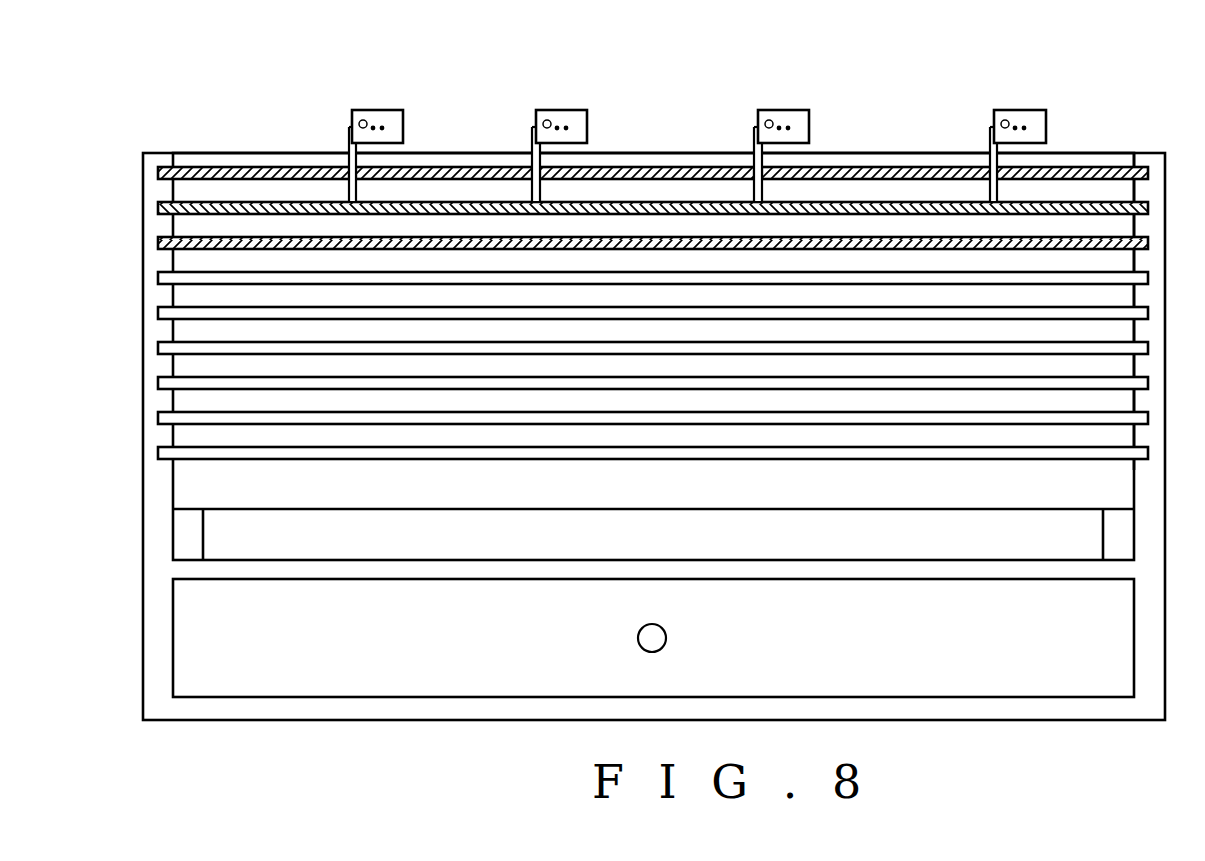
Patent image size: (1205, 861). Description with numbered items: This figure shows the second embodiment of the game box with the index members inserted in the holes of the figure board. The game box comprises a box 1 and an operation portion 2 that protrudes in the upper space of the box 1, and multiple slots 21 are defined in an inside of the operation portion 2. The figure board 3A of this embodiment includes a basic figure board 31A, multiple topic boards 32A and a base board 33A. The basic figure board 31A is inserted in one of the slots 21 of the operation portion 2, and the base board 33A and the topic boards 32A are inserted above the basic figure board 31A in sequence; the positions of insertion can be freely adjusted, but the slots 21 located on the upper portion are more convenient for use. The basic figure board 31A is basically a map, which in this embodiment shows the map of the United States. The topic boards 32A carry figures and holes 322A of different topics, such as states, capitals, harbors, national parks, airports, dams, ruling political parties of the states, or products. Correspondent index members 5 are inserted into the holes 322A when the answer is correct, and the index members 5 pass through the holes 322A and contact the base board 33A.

The box 1 is at (163, 685).
The operation portion 2 is at (148, 440).
The slots 21 is at (1142, 168).
The figure board 3A is at (590, 182).
The basic figure board 31A is at (230, 243).
The topic boards 32A is at (202, 168).
The holes 322A is at (345, 167).
The base board 33A is at (200, 208).
The index members 5 is at (372, 125).